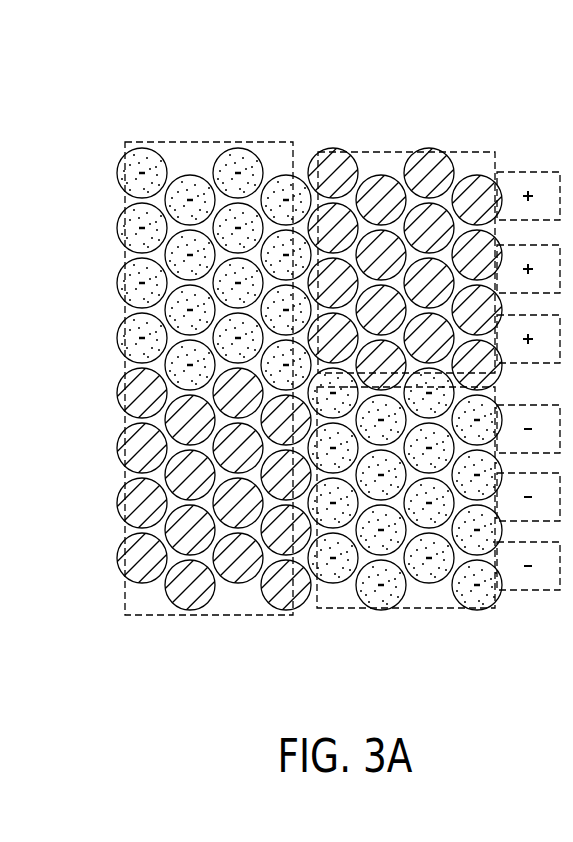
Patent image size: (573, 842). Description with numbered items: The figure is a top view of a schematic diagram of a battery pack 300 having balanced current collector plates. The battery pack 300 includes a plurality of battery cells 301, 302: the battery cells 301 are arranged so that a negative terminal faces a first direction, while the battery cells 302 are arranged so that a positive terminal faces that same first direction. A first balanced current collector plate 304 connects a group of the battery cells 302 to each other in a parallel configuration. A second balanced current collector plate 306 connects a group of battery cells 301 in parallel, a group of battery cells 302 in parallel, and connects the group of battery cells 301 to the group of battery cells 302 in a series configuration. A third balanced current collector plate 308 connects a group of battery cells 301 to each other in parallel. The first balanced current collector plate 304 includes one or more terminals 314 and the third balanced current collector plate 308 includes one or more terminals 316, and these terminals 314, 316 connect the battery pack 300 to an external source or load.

The battery pack 300 is at (155, 108).
The battery cells 301 is at (120, 280).
The battery cells 302 is at (120, 438).
The first balanced current collector plate 304 is at (374, 145).
The second balanced current collector plate 306 is at (261, 130).
The third balanced current collector plate 308 is at (431, 611).
The terminals 314 is at (522, 160).
The terminals 316 is at (517, 596).